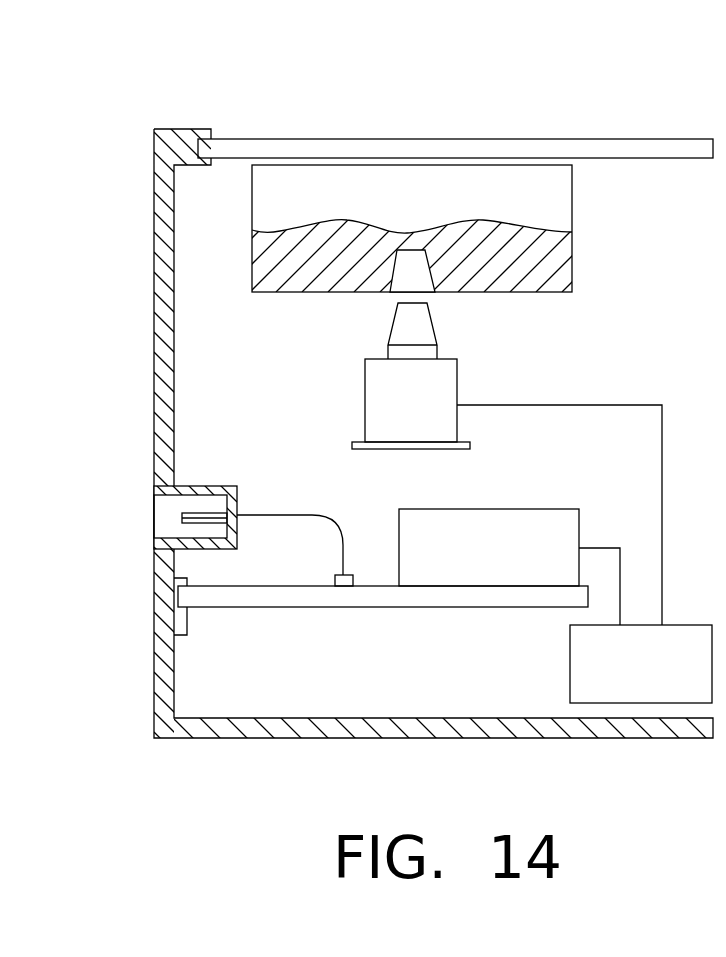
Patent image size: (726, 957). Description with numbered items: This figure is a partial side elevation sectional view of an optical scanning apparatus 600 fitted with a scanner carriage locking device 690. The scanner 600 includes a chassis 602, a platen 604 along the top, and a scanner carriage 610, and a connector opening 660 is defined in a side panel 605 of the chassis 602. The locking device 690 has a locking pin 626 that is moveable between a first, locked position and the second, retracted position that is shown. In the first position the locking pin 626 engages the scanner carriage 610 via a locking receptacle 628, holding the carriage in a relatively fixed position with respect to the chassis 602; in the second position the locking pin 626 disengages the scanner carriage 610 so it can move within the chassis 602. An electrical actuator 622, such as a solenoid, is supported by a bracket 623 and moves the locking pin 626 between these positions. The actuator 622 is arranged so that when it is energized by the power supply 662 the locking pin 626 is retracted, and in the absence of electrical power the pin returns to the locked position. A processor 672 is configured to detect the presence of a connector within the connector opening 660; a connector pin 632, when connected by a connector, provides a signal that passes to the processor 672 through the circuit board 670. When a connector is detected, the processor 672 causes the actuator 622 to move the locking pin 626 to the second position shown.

The optical scanning apparatus 600 is at (556, 113).
The chassis 602 is at (163, 283).
The platen 604 is at (421, 148).
The side panel 605 is at (155, 355).
The scanner carriage 610 is at (565, 198).
The electrical actuator 622 is at (375, 377).
The bracket 623 is at (355, 445).
The locking pin 626 is at (418, 332).
The locking receptacle 628 is at (402, 280).
The connector pin 632 is at (182, 517).
The connector opening 660 is at (162, 532).
The power supply 662 is at (576, 672).
The circuit board 670 is at (273, 597).
The processor 672 is at (537, 517).
The scanner carriage locking device 690 is at (617, 376).